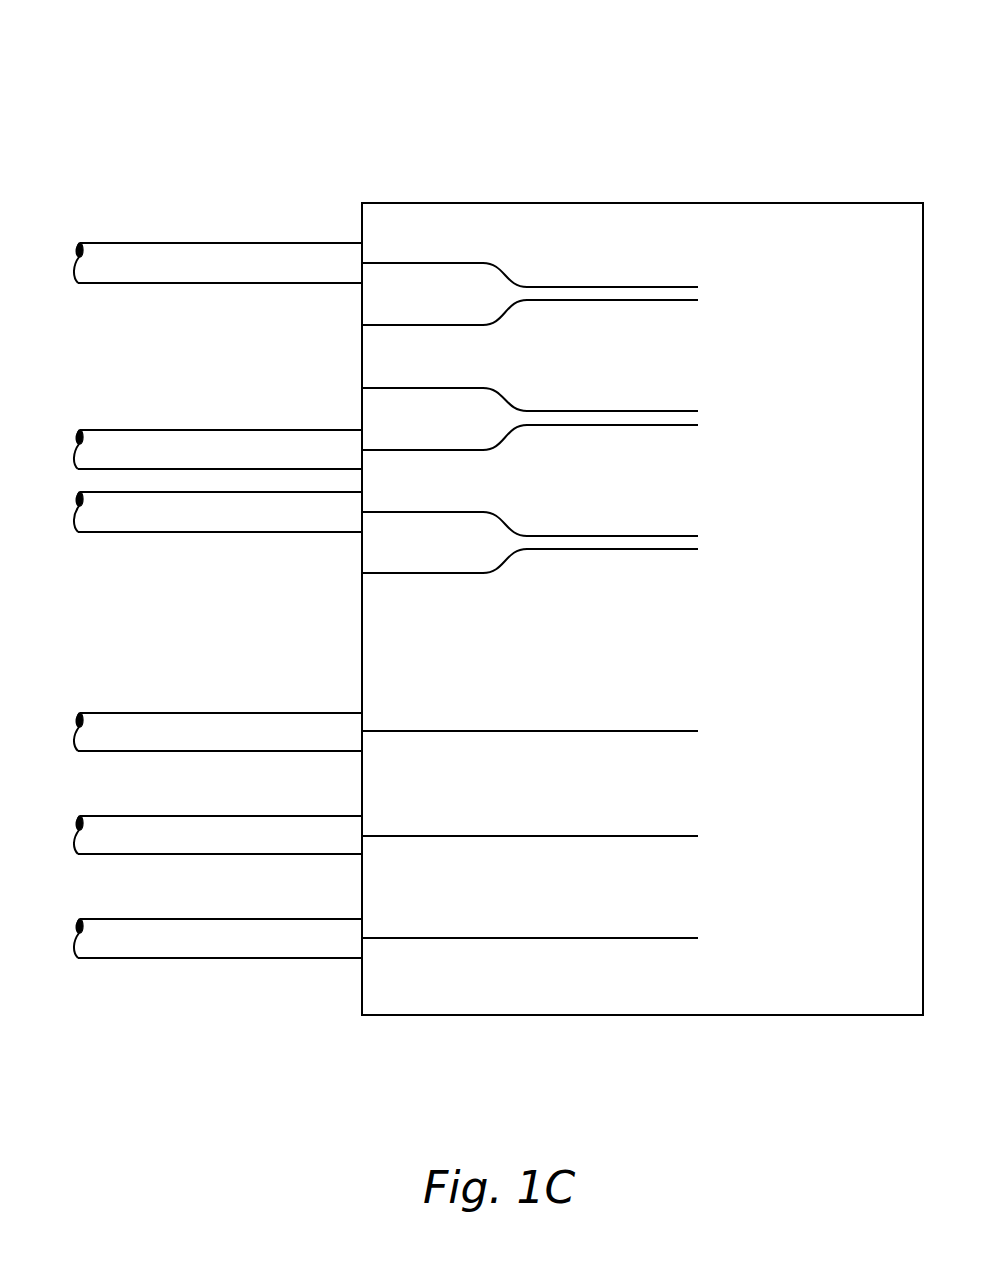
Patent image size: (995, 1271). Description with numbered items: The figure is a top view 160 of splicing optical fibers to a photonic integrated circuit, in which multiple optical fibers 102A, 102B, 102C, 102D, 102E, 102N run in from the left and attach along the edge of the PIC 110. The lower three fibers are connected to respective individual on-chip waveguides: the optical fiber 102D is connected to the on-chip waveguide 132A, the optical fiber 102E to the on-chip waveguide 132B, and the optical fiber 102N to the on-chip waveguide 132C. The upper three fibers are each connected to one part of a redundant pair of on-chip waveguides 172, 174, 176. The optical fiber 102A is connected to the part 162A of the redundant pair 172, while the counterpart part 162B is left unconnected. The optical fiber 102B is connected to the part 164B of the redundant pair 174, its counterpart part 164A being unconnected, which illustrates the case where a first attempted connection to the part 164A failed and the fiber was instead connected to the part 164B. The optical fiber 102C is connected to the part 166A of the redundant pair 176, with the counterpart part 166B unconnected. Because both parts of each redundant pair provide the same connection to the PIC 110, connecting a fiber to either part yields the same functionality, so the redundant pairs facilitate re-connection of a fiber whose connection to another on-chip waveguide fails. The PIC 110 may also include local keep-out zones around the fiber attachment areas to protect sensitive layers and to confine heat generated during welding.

The PIC 110 is at (645, 201).
The top view 160 is at (802, 46).
The optical fiber 102A is at (262, 243).
The optical fiber 102B is at (262, 430).
The optical fiber 102C is at (262, 532).
The optical fiber 102D is at (262, 713).
The optical fiber 102E is at (262, 816).
The optical fiber 102N is at (262, 919).
The part of redundant pair of on-chip waveguides 162A is at (378, 262).
The counterpart part of redundant pair of on-chip waveguides 162B is at (378, 325).
The part of redundant pair of on-chip waveguides 164A is at (378, 388).
The counterpart part of redundant pair of on-chip waveguides 164B is at (378, 450).
The part of redundant pair of on-chip waveguides 166A is at (378, 512).
The counterpart part of redundant pair of on-chip waveguides 166B is at (378, 573).
The redundant pair of on-chip waveguides 172 is at (676, 282).
The redundant pair of on-chip waveguides 174 is at (676, 407).
The redundant pair of on-chip waveguides 176 is at (676, 532).
The on-chip waveguide 132A is at (567, 731).
The on-chip waveguide 132B is at (567, 836).
The on-chip waveguide 132C is at (567, 938).